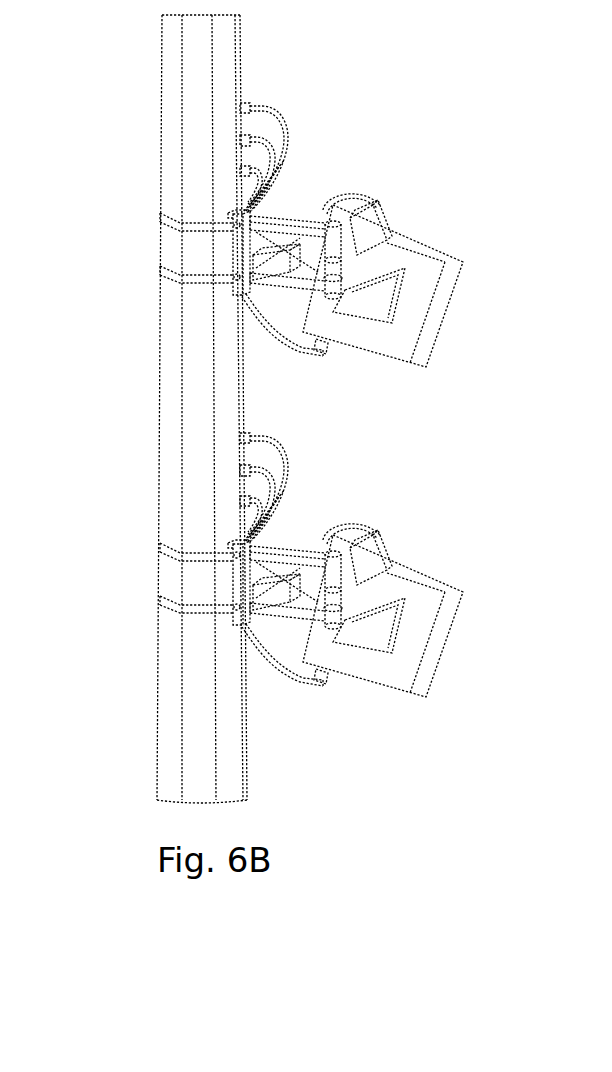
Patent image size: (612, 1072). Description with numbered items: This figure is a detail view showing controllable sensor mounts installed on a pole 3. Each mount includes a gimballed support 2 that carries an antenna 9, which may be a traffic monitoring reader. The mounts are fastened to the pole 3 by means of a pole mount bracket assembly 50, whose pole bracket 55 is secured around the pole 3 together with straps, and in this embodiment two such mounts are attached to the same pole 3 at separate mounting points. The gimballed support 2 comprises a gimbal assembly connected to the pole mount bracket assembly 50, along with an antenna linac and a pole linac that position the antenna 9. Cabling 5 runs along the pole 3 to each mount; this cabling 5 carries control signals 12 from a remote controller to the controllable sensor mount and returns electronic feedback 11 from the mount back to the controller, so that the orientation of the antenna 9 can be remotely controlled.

The gimballed support 2 is at (313, 198).
The pole 3 is at (178, 65).
The cabling 5 is at (262, 105).
The antenna 9 is at (398, 352).
The electronic feedback 11 is at (288, 508).
The control signals 12 is at (292, 162).
The pole mount bracket assembly 50 is at (273, 534).
The pole bracket 55 is at (241, 570).